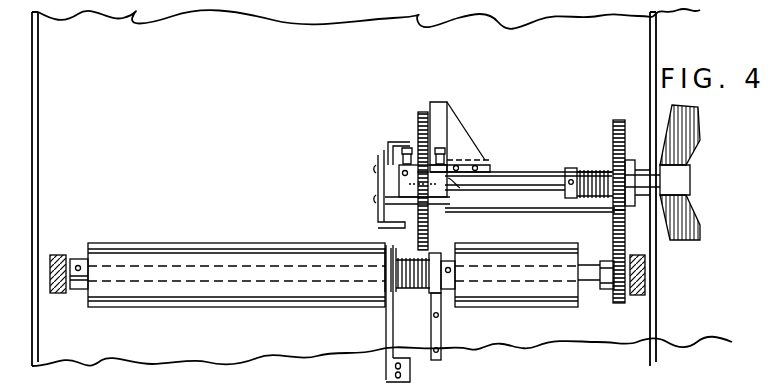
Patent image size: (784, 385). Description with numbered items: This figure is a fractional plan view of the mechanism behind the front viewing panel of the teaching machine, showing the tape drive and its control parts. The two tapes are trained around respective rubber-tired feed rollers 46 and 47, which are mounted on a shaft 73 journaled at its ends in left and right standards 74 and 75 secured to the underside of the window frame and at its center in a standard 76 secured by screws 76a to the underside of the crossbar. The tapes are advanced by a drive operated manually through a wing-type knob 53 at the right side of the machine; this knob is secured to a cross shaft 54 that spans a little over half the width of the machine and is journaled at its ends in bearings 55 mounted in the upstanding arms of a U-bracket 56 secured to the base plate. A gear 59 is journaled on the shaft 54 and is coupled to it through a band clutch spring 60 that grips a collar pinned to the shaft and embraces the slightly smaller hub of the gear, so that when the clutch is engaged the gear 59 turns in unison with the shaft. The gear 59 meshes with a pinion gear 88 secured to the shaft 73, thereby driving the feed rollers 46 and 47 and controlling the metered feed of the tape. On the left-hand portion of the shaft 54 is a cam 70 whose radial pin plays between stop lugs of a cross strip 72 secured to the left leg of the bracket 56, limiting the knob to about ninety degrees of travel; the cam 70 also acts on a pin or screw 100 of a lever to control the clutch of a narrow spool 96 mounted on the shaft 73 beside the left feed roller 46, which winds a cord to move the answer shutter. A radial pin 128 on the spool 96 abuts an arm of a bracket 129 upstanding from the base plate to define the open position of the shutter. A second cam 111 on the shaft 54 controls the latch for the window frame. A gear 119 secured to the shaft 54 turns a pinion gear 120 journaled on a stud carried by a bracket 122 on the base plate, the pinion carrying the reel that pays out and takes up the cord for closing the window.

The feed roller 46 is at (212, 300).
The feed roller 47 is at (518, 306).
The wing-type knob 53 is at (682, 134).
The cross shaft 54 is at (512, 180).
The bearings 55 is at (630, 208).
The U-bracket 56 is at (554, 170).
The gear 59 is at (618, 120).
The band clutch spring 60 is at (590, 168).
The cam 70 is at (422, 196).
The cross strip 72 is at (378, 186).
The shaft 73 is at (250, 270).
The left standard 74 is at (58, 256).
The right standard 75 is at (638, 295).
The standard 76 is at (428, 298).
The screws 76a is at (440, 347).
The pinion gear 88 is at (616, 300).
The spool 96 is at (390, 252).
The pin or screw 100 is at (408, 142).
The cam 111 is at (456, 188).
The gear 119 is at (418, 124).
The pinion gear 120 is at (426, 112).
The bracket 122 is at (458, 132).
The radial pin 128 is at (386, 292).
The bracket 129 is at (386, 342).